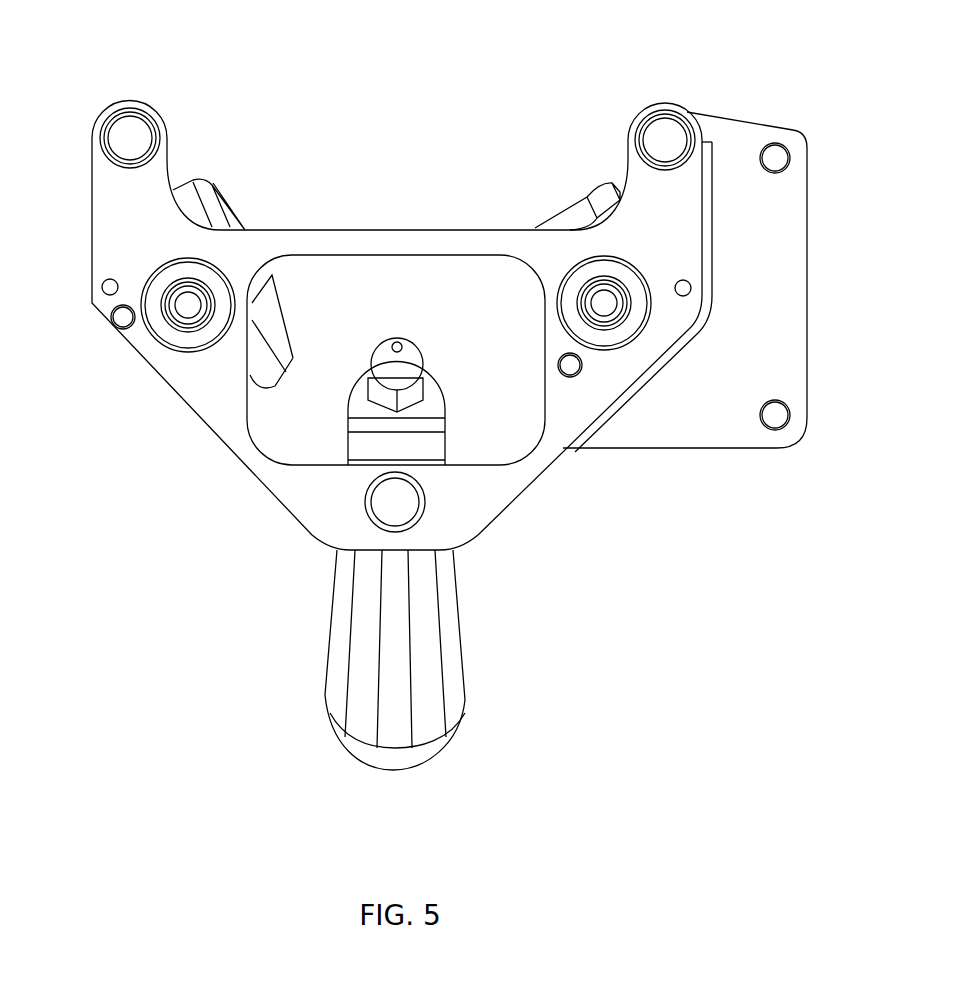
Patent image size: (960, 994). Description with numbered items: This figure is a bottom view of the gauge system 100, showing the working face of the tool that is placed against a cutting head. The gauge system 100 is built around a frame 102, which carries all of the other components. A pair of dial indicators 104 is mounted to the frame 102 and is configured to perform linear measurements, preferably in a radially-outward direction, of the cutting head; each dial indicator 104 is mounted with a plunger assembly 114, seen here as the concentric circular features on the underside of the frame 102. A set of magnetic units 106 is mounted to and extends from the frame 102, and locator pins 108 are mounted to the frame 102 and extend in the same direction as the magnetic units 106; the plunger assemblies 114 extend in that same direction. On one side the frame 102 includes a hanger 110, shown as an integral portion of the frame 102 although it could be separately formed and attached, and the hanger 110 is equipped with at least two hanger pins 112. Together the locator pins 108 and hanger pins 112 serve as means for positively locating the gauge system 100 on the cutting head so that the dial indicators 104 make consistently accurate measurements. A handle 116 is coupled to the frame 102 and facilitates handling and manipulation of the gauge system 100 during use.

The gauge system 100 is at (402, 285).
The frame 102 is at (463, 228).
The dial indicators 104 is at (237, 210).
The magnetic units 106 is at (143, 114).
The locator pins 108 is at (94, 296).
The hanger 110 is at (795, 347).
The hanger pins 112 is at (793, 165).
The plunger assembly 114 is at (159, 346).
The handle 116 is at (467, 692).